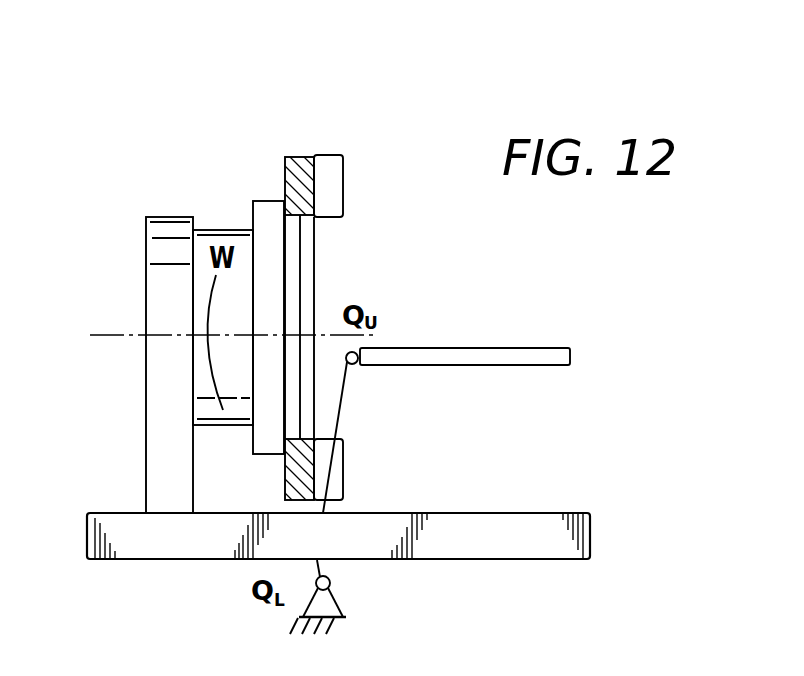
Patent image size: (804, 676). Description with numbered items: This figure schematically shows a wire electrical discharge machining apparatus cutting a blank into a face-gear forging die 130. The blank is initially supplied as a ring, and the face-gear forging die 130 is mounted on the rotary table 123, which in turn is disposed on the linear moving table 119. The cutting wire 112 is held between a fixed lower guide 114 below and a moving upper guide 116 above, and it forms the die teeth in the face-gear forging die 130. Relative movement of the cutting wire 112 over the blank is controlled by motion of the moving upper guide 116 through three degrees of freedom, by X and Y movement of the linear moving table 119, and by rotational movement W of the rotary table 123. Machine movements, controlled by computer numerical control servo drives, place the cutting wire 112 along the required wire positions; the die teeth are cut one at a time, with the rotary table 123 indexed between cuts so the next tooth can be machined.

The rotary table 123 is at (222, 227).
The face-gear forging die 130 is at (303, 157).
The moving upper guide 116 is at (510, 345).
The cutting wire 112 is at (343, 408).
The linear moving table 119 is at (558, 512).
The fixed lower guide 114 is at (332, 588).